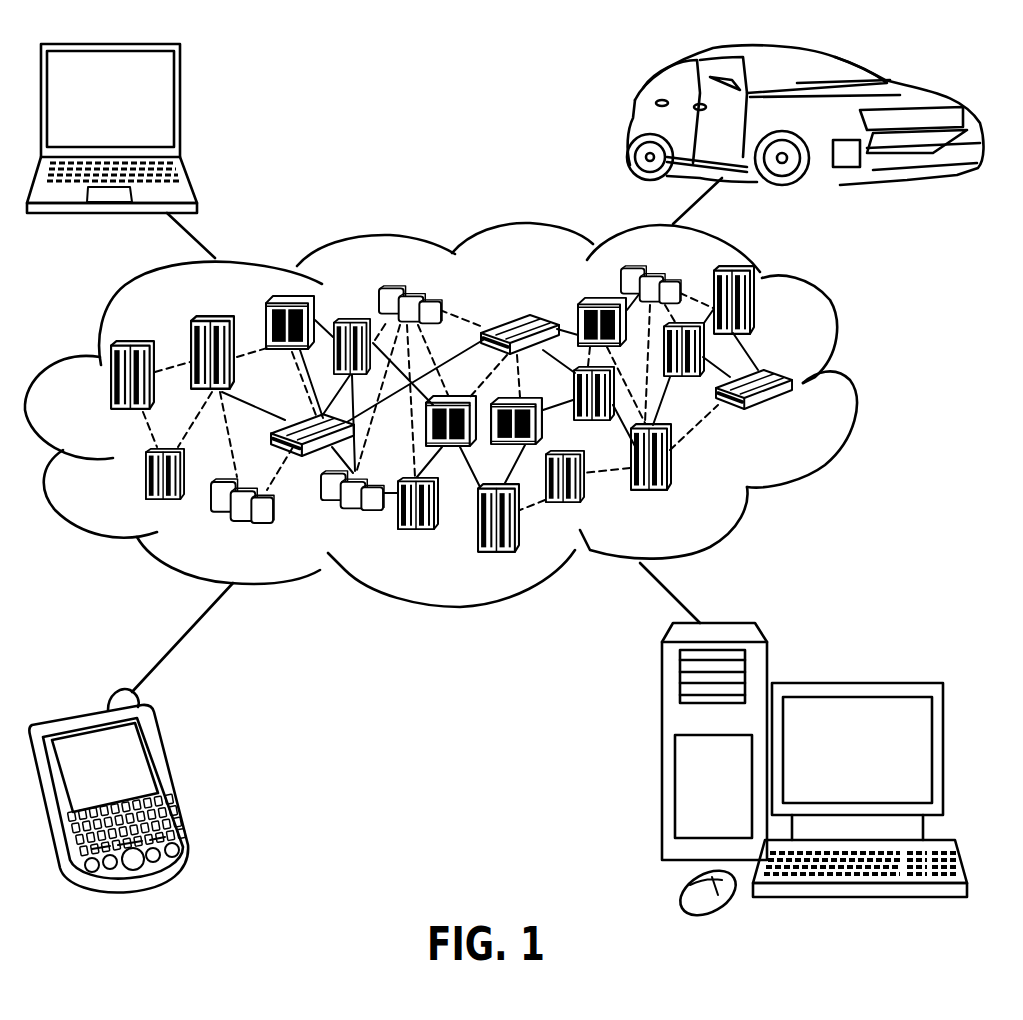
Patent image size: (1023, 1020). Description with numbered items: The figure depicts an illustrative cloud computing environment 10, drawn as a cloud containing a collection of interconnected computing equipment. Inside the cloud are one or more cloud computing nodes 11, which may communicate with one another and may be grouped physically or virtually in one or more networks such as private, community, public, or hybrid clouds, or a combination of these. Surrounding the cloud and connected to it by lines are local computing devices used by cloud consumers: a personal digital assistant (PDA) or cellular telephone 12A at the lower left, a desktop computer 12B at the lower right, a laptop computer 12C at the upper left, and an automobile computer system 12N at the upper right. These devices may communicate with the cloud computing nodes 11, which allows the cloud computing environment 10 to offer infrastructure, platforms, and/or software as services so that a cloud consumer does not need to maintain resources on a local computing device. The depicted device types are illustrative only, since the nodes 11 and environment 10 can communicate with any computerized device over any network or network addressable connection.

The cloud computing environment 10 is at (857, 387).
The cloud computing nodes 11 is at (795, 418).
The personal digital assistant (PDA) or cellular telephone 12A is at (170, 782).
The desktop computer 12B is at (853, 683).
The laptop computer 12C is at (180, 108).
The automobile computer system 12N is at (630, 120).